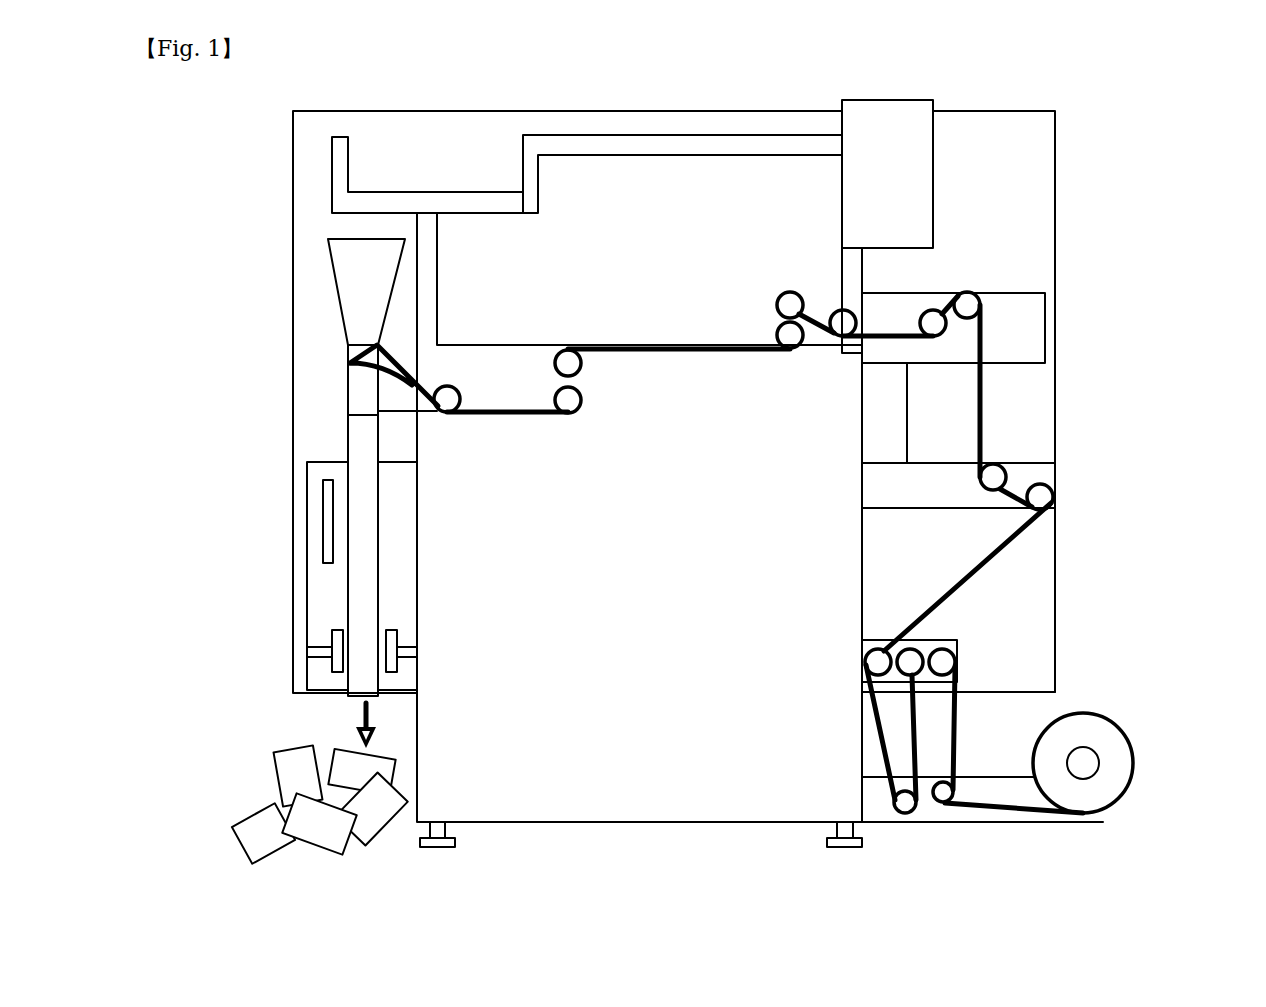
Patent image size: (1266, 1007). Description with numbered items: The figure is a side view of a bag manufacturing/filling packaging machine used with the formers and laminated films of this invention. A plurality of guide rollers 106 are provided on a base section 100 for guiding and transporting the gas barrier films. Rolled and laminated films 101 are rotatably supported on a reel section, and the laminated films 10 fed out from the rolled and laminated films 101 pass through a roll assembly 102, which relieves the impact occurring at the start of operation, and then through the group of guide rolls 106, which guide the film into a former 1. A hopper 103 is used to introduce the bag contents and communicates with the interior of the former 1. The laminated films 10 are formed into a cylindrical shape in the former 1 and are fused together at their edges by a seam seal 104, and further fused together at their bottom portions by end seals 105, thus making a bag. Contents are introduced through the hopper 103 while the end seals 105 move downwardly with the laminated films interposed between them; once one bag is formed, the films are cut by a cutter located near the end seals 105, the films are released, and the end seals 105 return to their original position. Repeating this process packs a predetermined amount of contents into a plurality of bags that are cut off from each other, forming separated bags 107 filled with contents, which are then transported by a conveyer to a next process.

The former 1 is at (402, 343).
The laminated films 10 is at (662, 355).
The base section 100 is at (670, 822).
The rolled and laminated films 101 is at (1105, 720).
The roll assembly 102 is at (918, 640).
The hopper 103 is at (342, 290).
The seam seal 104 is at (323, 530).
The end seals 105 is at (330, 635).
The guide rollers 106 is at (1005, 295).
The separated bags 107 is at (288, 745).